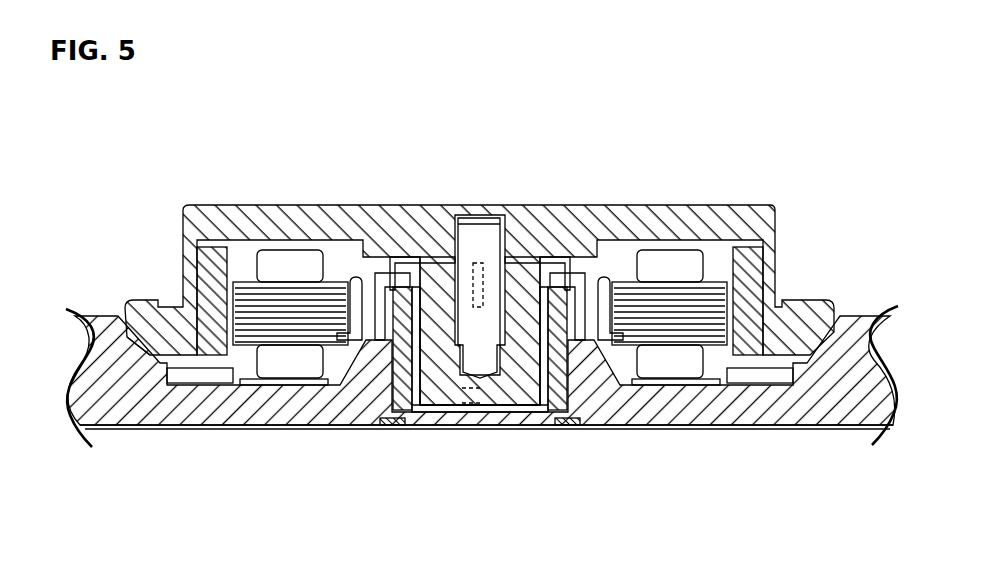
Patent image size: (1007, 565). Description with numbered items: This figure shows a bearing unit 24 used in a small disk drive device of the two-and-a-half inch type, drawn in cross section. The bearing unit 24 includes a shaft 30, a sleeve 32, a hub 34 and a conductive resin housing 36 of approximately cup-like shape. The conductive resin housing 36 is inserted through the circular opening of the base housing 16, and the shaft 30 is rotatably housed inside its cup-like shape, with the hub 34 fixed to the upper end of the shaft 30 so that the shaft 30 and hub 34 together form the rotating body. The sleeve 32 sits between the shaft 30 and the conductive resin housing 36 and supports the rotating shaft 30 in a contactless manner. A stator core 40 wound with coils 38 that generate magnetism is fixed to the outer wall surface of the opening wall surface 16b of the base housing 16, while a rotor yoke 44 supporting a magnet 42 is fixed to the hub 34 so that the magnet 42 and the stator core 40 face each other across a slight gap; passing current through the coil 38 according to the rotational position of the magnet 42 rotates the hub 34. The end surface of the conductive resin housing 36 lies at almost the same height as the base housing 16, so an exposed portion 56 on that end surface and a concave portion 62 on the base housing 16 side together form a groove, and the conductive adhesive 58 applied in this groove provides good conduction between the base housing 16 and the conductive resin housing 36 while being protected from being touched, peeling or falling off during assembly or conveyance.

The base housing 16 is at (122, 397).
The opening wall surface 16b is at (461, 422).
The bearing unit 24 is at (467, 299).
The shaft 30 is at (479, 233).
The sleeve 32 is at (528, 372).
The hub 34 is at (207, 218).
The conductive resin housing 36 is at (564, 372).
The coil 38 is at (290, 368).
The stator core 40 is at (247, 332).
The magnet 42 is at (207, 348).
The rotor yoke 44 is at (148, 310).
The exposed portion 56 is at (400, 430).
The conductive adhesive 58 is at (392, 428).
The concave portion 62 is at (384, 429).